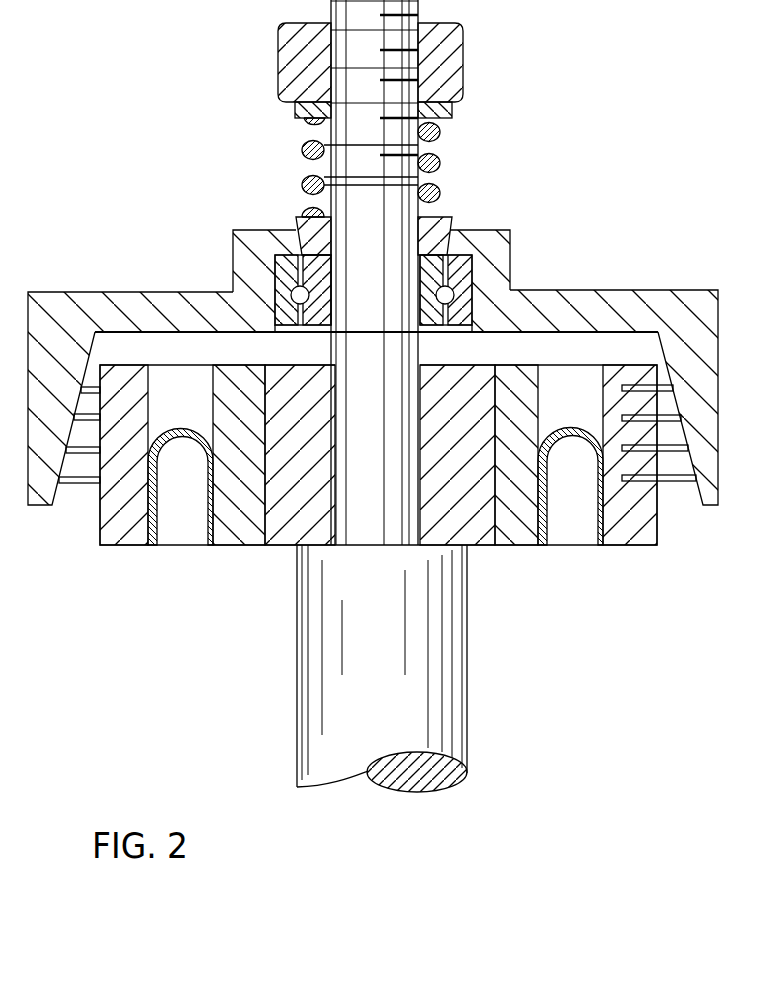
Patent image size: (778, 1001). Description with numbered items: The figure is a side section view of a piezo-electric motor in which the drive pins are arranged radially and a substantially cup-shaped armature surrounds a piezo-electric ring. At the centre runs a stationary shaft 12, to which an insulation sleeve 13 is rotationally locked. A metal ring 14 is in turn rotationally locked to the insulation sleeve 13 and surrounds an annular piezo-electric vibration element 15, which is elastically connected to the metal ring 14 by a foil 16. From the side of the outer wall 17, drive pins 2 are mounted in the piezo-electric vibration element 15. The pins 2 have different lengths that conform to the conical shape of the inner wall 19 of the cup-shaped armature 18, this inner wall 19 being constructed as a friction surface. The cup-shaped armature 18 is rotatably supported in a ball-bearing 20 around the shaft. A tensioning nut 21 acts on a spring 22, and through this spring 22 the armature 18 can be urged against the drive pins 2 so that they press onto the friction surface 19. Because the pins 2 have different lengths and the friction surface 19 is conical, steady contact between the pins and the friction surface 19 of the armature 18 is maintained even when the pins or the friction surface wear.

The drive pins 2 is at (667, 418).
The stationary shaft 12 is at (445, 680).
The insulation sleeve 13 is at (470, 528).
The metal ring 14 is at (513, 532).
The piezo-electric vibration element 15 is at (657, 543).
The foil 16 is at (607, 520).
The outer wall 17 is at (660, 513).
The cup-shaped armature 18 is at (702, 398).
The inner wall 19 is at (660, 371).
The ball-bearing 20 is at (465, 272).
The tensioning nut 21 is at (464, 68).
The spring 22 is at (440, 165).